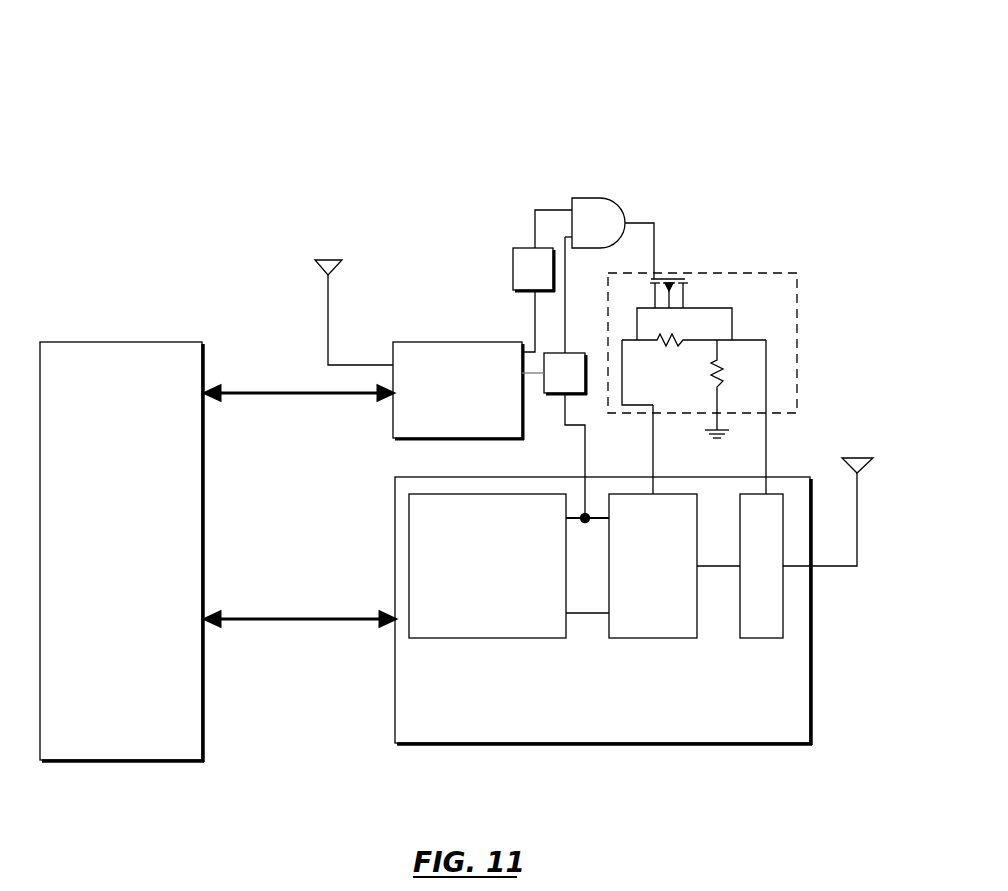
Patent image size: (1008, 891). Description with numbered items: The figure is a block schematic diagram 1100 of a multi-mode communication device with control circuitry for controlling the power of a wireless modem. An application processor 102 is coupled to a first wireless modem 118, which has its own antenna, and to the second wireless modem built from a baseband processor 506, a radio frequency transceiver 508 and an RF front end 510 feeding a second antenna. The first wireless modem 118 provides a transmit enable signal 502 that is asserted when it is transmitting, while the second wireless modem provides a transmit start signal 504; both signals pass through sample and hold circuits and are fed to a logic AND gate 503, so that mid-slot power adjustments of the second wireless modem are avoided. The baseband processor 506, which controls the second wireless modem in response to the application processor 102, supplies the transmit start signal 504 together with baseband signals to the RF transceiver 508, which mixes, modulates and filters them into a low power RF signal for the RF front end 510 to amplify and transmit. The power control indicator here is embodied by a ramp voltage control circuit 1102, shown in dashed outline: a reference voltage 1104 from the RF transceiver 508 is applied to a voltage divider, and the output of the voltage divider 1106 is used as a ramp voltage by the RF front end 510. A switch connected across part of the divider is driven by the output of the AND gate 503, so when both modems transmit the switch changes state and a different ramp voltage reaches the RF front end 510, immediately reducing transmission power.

The block schematic diagram 1100 is at (816, 41).
The application processor 102 is at (128, 342).
The first wireless modem 118 is at (392, 423).
The transmit enable signal 502 is at (530, 310).
The logic AND gate 503 is at (597, 198).
The transmit start signal 504 is at (587, 458).
The baseband processor 506 is at (462, 638).
The radio frequency transceiver 508 is at (683, 638).
The RF front end 510 is at (777, 638).
The ramp voltage control circuit 1102 is at (737, 273).
The reference voltage 1104 is at (653, 433).
The output of the voltage divider 1106 is at (766, 438).